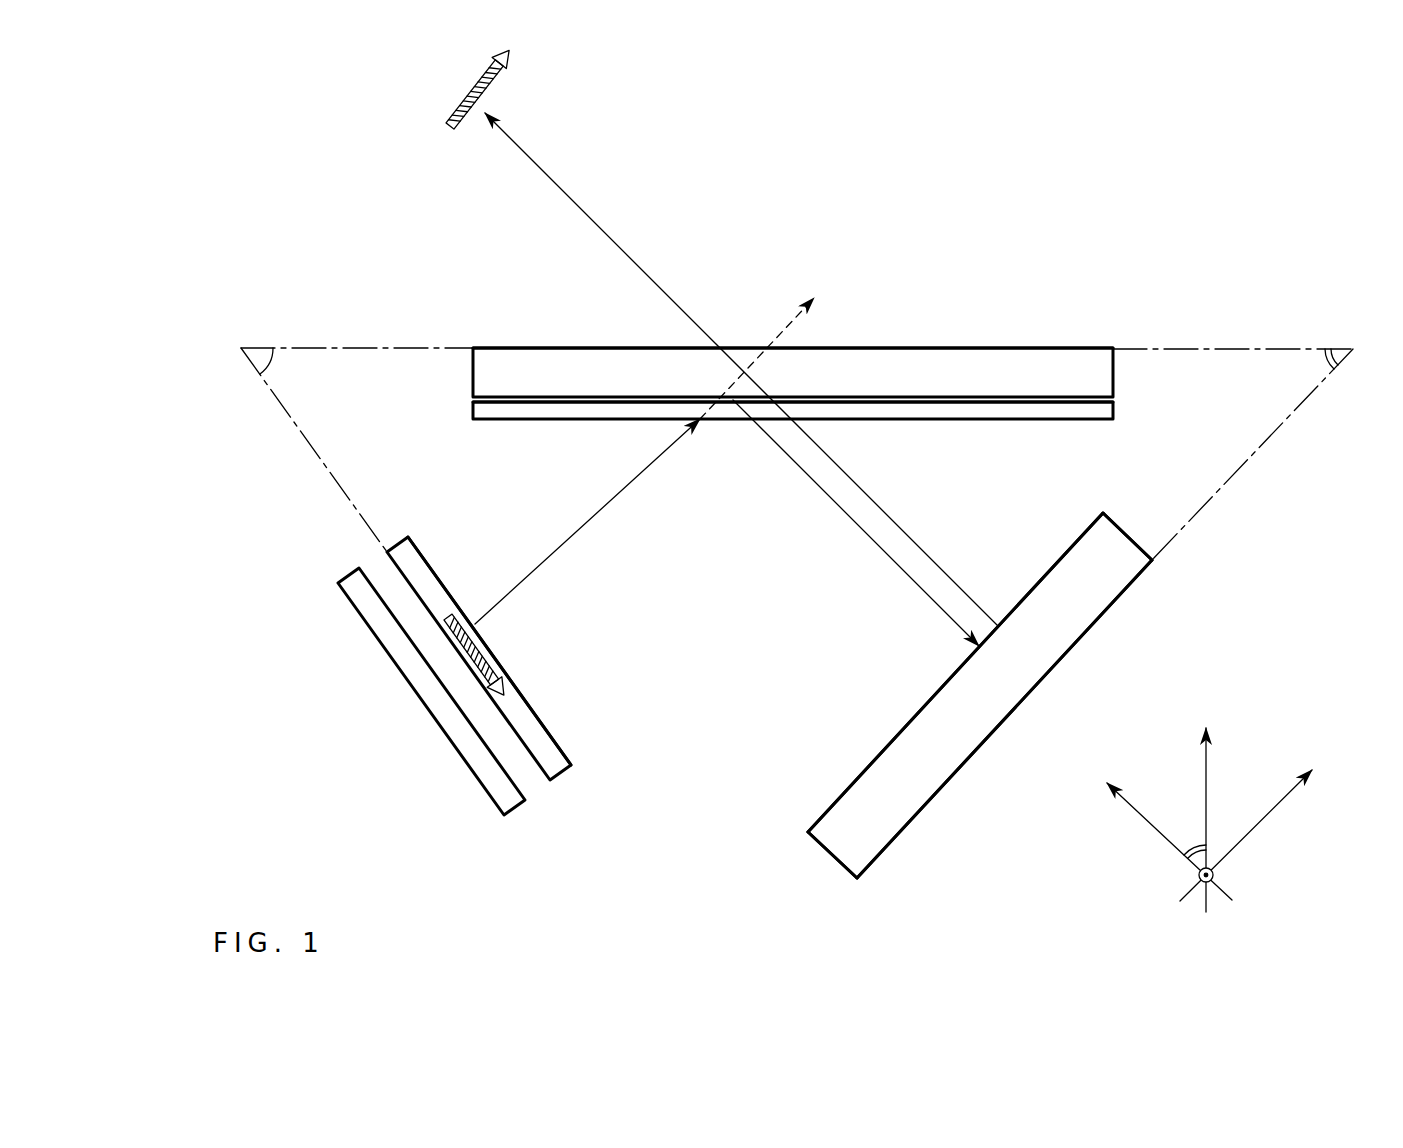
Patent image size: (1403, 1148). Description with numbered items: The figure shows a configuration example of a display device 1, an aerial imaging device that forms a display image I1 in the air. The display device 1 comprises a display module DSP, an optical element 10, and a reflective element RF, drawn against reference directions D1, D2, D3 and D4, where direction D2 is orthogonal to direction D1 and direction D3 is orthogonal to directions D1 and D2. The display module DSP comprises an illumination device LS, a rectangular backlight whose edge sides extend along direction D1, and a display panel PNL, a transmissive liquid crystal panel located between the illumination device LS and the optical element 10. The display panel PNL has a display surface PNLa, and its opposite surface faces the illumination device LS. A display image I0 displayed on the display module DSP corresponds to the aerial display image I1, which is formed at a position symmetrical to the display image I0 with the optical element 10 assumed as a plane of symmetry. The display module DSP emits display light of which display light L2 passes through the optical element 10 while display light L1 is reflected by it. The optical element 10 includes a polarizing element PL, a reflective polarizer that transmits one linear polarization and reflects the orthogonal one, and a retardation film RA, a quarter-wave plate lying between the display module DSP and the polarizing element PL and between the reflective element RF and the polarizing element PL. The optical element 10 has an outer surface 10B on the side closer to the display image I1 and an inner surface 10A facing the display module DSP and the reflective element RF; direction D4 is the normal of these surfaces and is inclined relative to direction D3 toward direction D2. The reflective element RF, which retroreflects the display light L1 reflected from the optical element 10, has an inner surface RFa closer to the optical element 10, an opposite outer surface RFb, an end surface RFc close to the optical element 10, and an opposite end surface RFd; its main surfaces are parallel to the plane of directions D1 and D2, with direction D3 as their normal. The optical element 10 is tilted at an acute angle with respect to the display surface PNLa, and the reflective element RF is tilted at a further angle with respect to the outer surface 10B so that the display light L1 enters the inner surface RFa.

The display device 1 is at (909, 236).
The optical element 10 is at (828, 352).
The inner surface 10A is at (1016, 404).
The outer surface 10B is at (969, 345).
The polarizing element PL is at (1113, 374).
The retardation film RA is at (1113, 411).
The display light L1 is at (812, 483).
The display light L2 is at (780, 335).
The display image I1 is at (497, 72).
The display image I0 is at (505, 672).
The display module DSP is at (482, 695).
The display panel PNL is at (557, 768).
The display surface PNLa is at (542, 710).
The illumination device LS is at (505, 810).
The reflective element RF is at (1130, 605).
The inner surface RFa is at (845, 782).
The outer surface RFb is at (902, 838).
The end surface RFc is at (1130, 530).
The end surface RFd is at (825, 855).
The direction D1 is at (1188, 880).
The direction D2 is at (1257, 820).
The direction D3 is at (1162, 826).
The direction D4 is at (1206, 806).